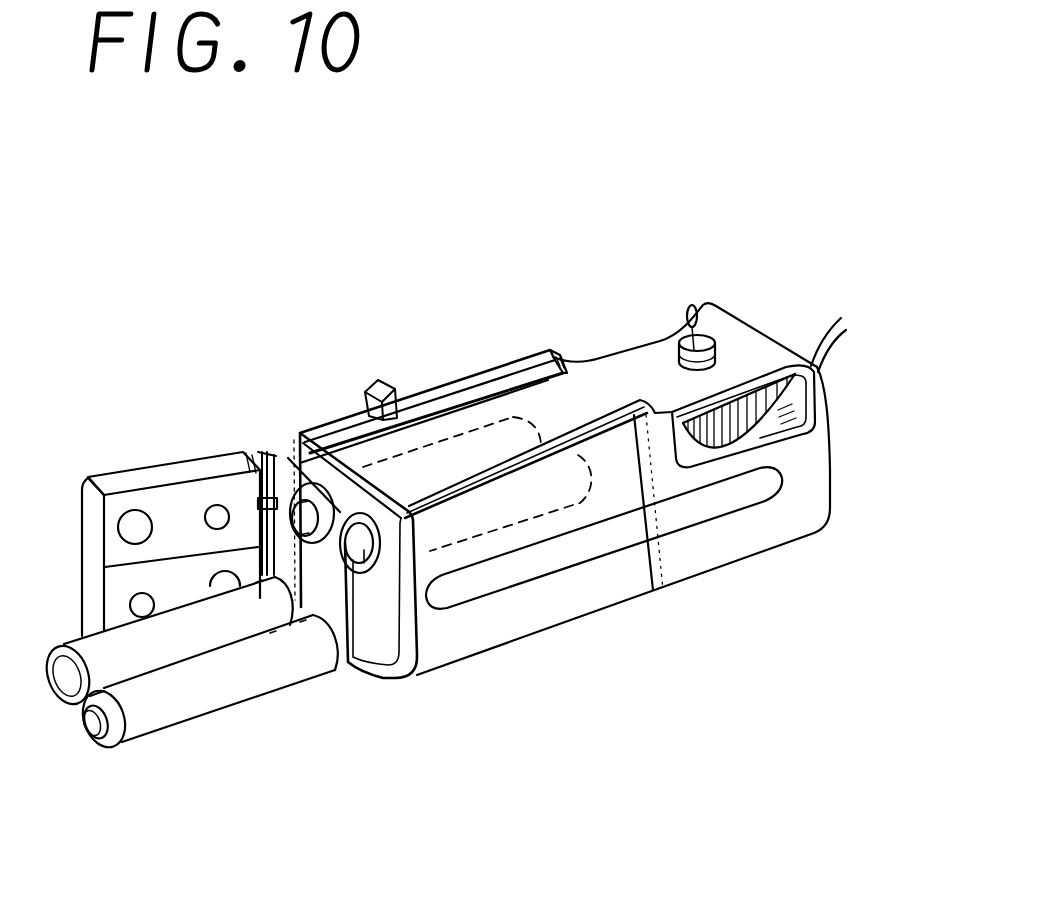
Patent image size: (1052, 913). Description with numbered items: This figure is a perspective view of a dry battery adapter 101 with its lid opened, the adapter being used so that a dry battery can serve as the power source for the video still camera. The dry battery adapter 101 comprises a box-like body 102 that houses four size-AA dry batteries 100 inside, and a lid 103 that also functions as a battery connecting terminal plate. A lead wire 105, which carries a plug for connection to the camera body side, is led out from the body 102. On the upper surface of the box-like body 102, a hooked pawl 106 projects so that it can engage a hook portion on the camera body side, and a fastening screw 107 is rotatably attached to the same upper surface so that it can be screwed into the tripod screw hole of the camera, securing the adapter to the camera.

The dry batteries 100 is at (250, 610).
The dry battery adapter 101 is at (739, 314).
The box-like body 102 is at (600, 585).
The lid 103 is at (167, 476).
The lead wire 105 is at (838, 337).
The hooked pawl 106 is at (387, 385).
The fastening screw 107 is at (688, 310).